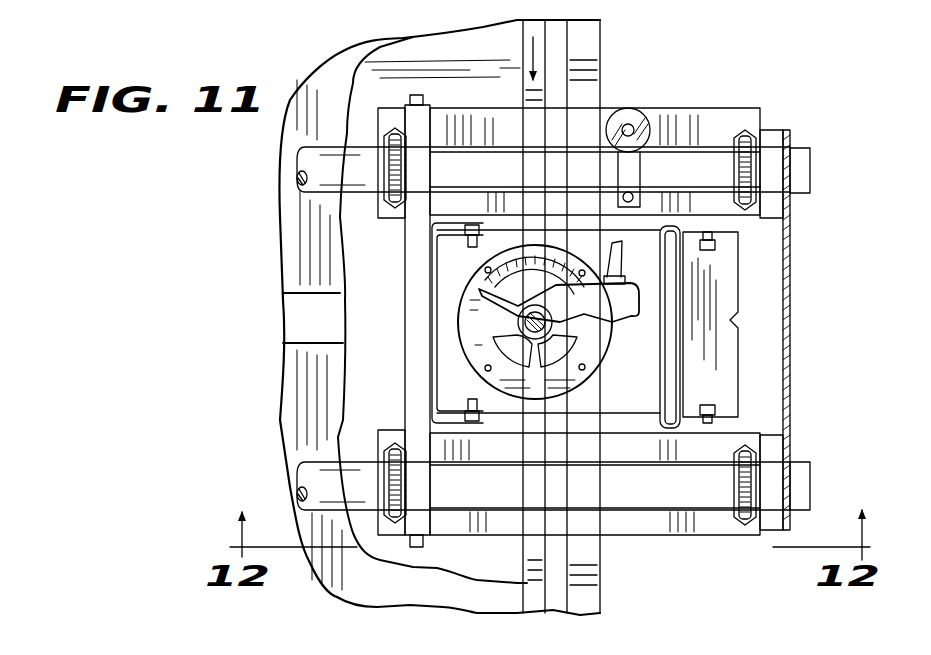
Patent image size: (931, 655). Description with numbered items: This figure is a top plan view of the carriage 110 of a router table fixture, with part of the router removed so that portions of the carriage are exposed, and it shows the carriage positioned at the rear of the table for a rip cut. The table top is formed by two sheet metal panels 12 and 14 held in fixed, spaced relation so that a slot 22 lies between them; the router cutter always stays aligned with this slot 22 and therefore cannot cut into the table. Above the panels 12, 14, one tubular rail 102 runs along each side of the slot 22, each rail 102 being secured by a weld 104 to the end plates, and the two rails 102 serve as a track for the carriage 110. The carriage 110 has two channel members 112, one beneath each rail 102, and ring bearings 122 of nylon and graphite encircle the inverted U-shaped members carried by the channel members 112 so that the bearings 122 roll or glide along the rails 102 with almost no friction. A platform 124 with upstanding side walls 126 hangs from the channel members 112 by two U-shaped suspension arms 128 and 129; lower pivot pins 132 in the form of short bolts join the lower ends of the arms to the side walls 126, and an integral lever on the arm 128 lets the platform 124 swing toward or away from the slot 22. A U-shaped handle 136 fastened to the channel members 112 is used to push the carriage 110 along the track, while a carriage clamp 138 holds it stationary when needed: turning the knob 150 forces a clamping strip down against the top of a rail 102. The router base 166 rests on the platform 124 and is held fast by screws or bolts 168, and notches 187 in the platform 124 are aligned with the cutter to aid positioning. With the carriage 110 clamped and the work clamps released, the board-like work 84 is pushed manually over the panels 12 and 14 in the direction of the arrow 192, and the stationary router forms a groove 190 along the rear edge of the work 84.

The sheet metal panel 12 is at (313, 57).
The sheet metal panel 14 is at (292, 430).
The slot 22 is at (325, 320).
The stock or work 84 is at (413, 583).
The tubular rail 102 is at (298, 178).
The weld 104 is at (793, 197).
The carriage 110 is at (335, 240).
The channel member 112 is at (747, 100).
The ring bearing 122 is at (300, 170).
The platform 124 is at (340, 387).
The upstanding side wall 126 is at (517, 418).
The U-shaped suspension arm 128 is at (433, 325).
The U-shaped suspension arm 129 is at (687, 287).
The lower pivot pin 132 is at (463, 240).
The U-shaped handle 136 is at (417, 420).
The carriage clamp 138 is at (660, 107).
The knob 150 is at (632, 107).
The base 166 is at (587, 363).
The screw or bolt 168 is at (483, 370).
The notch 187 is at (740, 320).
The groove 190 is at (537, 17).
The arrow 192 is at (560, 48).